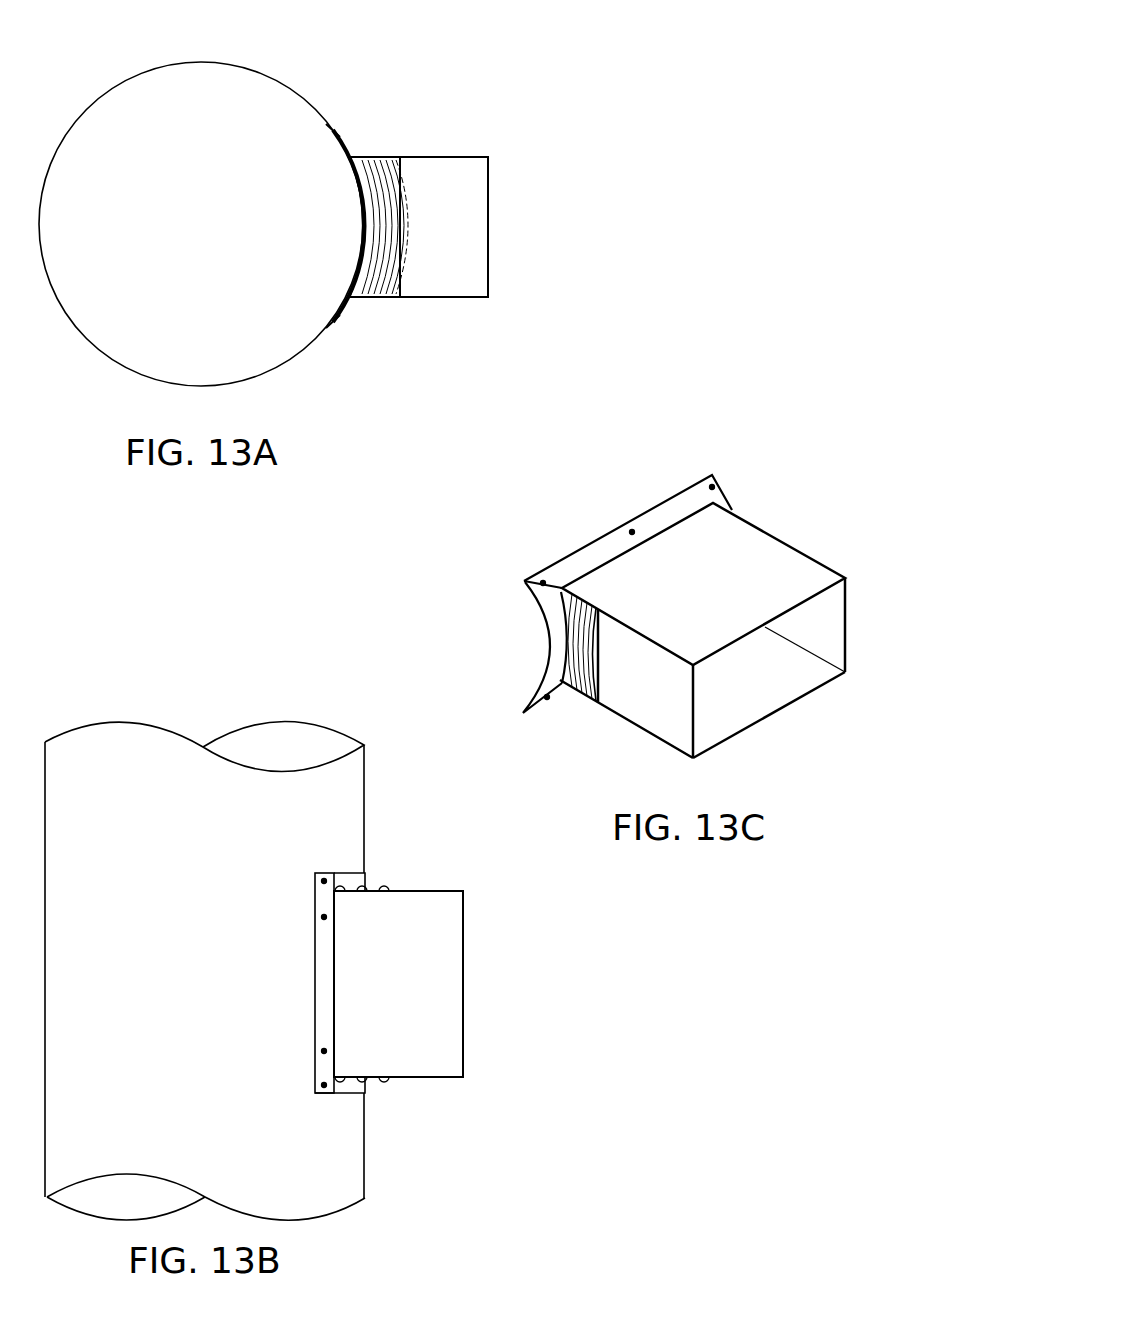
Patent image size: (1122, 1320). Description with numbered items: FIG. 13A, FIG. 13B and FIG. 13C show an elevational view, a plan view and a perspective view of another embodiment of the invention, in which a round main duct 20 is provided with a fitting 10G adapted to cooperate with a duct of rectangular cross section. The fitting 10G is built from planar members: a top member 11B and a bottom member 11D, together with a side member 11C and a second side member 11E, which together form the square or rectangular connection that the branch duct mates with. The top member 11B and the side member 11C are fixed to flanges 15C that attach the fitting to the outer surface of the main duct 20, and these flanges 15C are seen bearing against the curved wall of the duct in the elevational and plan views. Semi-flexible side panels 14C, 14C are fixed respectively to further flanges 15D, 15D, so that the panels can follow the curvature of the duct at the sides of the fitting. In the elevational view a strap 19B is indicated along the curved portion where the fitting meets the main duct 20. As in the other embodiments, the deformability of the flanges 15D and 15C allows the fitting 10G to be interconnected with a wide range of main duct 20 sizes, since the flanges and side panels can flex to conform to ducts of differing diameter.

In FIG. 13A, the fitting 10G is at (518, 334).
In FIG. 13B, the fitting 10G is at (506, 1099).
In FIG. 13C, the fitting 10G is at (818, 731).
In FIG. 13A, the top member 11B is at (460, 157).
In FIG. 13B, the top member 11B is at (425, 928).
In FIG. 13C, the top member 11B is at (760, 570).
In FIG. 13B, the side member 11C is at (403, 1080).
In FIG. 13C, the side member 11C is at (647, 708).
In FIG. 13C, the bottom member 11D is at (720, 747).
In FIG. 13C, the side member 11E is at (845, 622).
In FIG. 13A, the semi-flexible side panel 14C is at (378, 157).
In FIG. 13B, the semi-flexible side panel 14C is at (383, 885).
In FIG. 13C, the semi-flexible side panel 14C is at (582, 697).
In FIG. 13A, the flange 15C is at (342, 140).
In FIG. 13B, the flange 15C is at (322, 962).
In FIG. 13C, the flange 15C is at (588, 555).
In FIG. 13B, the flange 15D is at (331, 880).
In FIG. 13C, the flange 15D is at (733, 492).
In FIG. 13A, the strap 19B is at (333, 323).
In FIG. 13B, the strap 19B is at (323, 1093).
In FIG. 13A, the round main duct 20 is at (297, 362).
In FIG. 13B, the round main duct 20 is at (190, 730).